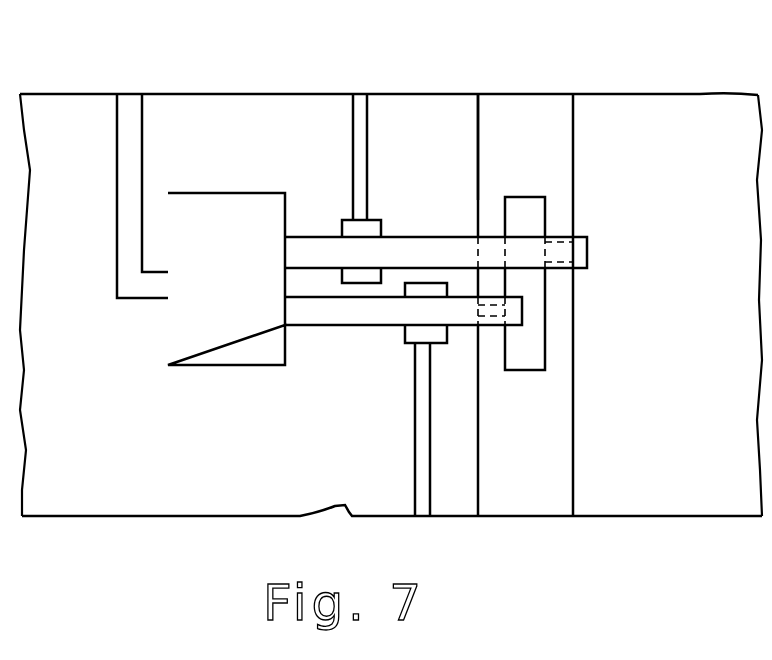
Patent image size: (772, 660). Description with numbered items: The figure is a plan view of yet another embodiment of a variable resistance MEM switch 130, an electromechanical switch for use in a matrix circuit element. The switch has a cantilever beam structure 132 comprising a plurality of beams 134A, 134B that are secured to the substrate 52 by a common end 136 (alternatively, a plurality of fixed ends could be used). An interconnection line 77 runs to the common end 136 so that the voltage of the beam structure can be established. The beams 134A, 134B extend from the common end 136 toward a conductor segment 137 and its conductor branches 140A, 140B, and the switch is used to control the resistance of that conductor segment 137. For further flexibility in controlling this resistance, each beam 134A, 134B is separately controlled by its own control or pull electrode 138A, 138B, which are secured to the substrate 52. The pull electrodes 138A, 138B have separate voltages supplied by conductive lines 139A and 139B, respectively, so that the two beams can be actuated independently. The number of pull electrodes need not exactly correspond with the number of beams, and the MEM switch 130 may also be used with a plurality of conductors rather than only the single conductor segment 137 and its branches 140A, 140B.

The substrate 52 is at (688, 479).
The interconnection line 77 is at (117, 240).
The variable resistance MEM switch 130 is at (318, 205).
The cantilever beam structure 132 is at (298, 337).
The beam 134A is at (587, 252).
The beam 134B is at (523, 313).
The common end 136 is at (190, 345).
The conductor segment 137 is at (556, 96).
The pull electrode 138A is at (370, 231).
The pull electrode 138B is at (410, 345).
The conductive line 139A is at (370, 124).
The conductive line 139B is at (430, 493).
The conductor branch 140A is at (491, 203).
The conductor branch 140B is at (556, 207).